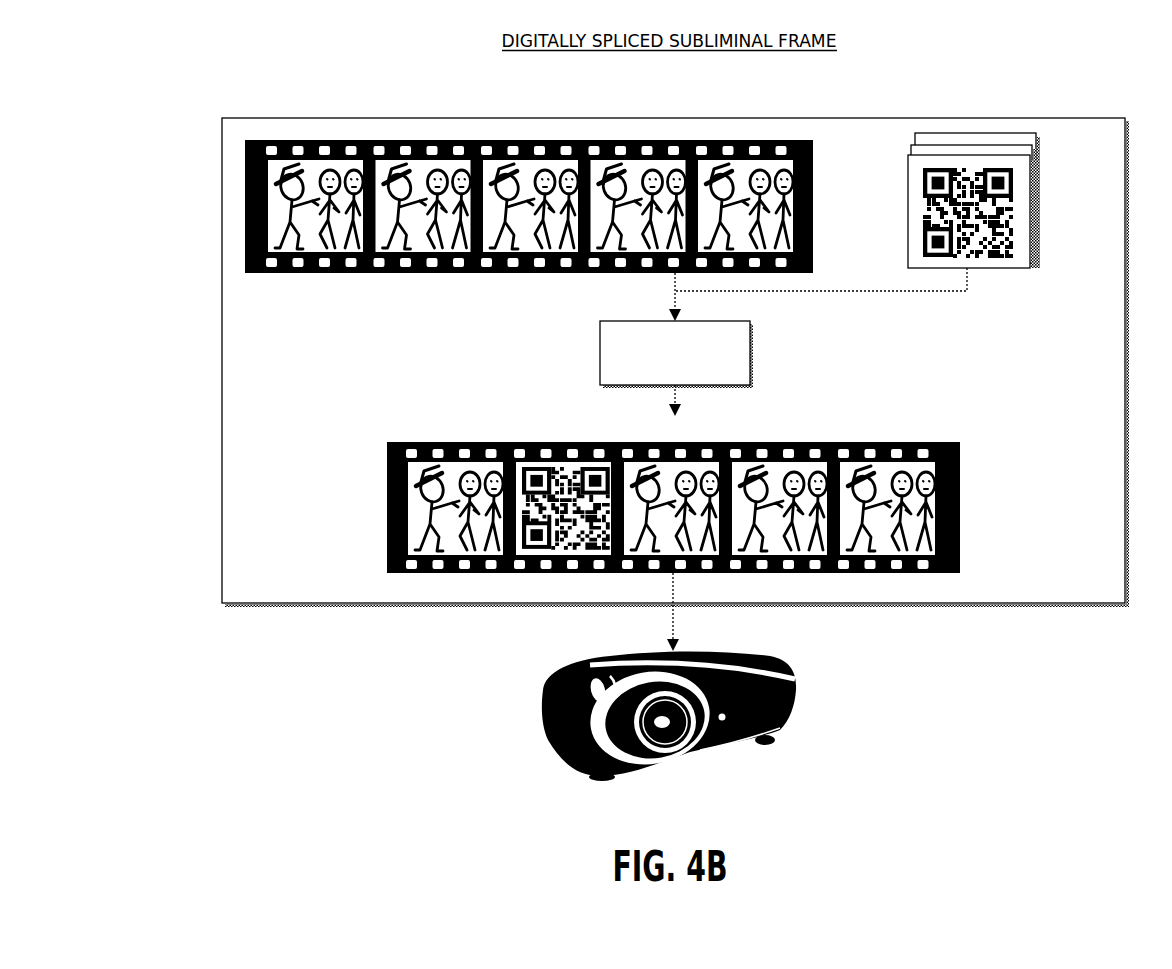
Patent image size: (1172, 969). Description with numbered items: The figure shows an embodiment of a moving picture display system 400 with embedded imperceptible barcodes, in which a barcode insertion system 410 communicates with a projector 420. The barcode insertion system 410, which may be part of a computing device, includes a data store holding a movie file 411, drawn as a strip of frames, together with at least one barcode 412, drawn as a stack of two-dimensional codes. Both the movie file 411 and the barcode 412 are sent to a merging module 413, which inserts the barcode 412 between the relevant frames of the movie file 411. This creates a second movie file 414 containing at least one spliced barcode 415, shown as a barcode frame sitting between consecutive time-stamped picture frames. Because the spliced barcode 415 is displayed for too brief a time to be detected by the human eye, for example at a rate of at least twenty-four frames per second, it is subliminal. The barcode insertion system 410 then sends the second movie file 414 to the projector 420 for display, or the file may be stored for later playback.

The moving picture display system 400 is at (186, 57).
The barcode insertion system 410 is at (1095, 118).
The movie file 411 is at (378, 273).
The barcode 412 is at (908, 212).
The merging module 413 is at (730, 321).
The second movie file 414 is at (647, 509).
The spliced barcode 415 is at (562, 575).
The projector 420 is at (785, 670).